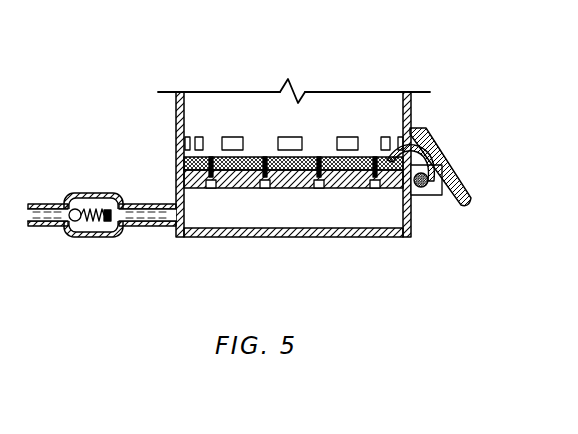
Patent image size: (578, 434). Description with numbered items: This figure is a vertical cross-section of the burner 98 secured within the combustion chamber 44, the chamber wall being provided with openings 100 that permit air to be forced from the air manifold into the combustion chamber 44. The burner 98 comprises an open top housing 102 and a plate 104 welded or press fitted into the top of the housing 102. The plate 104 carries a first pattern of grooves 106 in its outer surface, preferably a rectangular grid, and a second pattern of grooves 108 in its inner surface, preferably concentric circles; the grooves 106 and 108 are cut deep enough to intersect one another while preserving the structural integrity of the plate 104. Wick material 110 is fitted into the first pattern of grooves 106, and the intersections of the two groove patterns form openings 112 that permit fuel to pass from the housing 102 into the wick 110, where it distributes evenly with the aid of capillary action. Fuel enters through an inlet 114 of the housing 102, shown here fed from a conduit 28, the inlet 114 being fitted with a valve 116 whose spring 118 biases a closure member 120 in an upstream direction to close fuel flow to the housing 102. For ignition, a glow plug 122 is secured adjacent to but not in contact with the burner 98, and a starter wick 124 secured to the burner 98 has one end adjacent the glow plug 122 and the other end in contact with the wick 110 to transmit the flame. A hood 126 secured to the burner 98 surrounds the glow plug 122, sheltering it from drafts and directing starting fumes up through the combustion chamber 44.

The inlet conduit 28 is at (40, 203).
The combustion chamber 44 is at (295, 86).
The burner 98 is at (160, 92).
The openings 100 is at (300, 137).
The open top housing 102 is at (398, 238).
The plate 104 is at (283, 188).
The first pattern of grooves 106 is at (266, 162).
The second pattern of grooves 108 is at (262, 188).
The wick material 110 is at (366, 156).
The openings 112 is at (318, 188).
The inlet 114 is at (178, 228).
The valve 116 is at (84, 192).
The spring 118 is at (100, 211).
The closure member 120 is at (72, 236).
The glow plug 122 is at (420, 196).
The starter wick 124 is at (430, 150).
The hood 126 is at (455, 175).